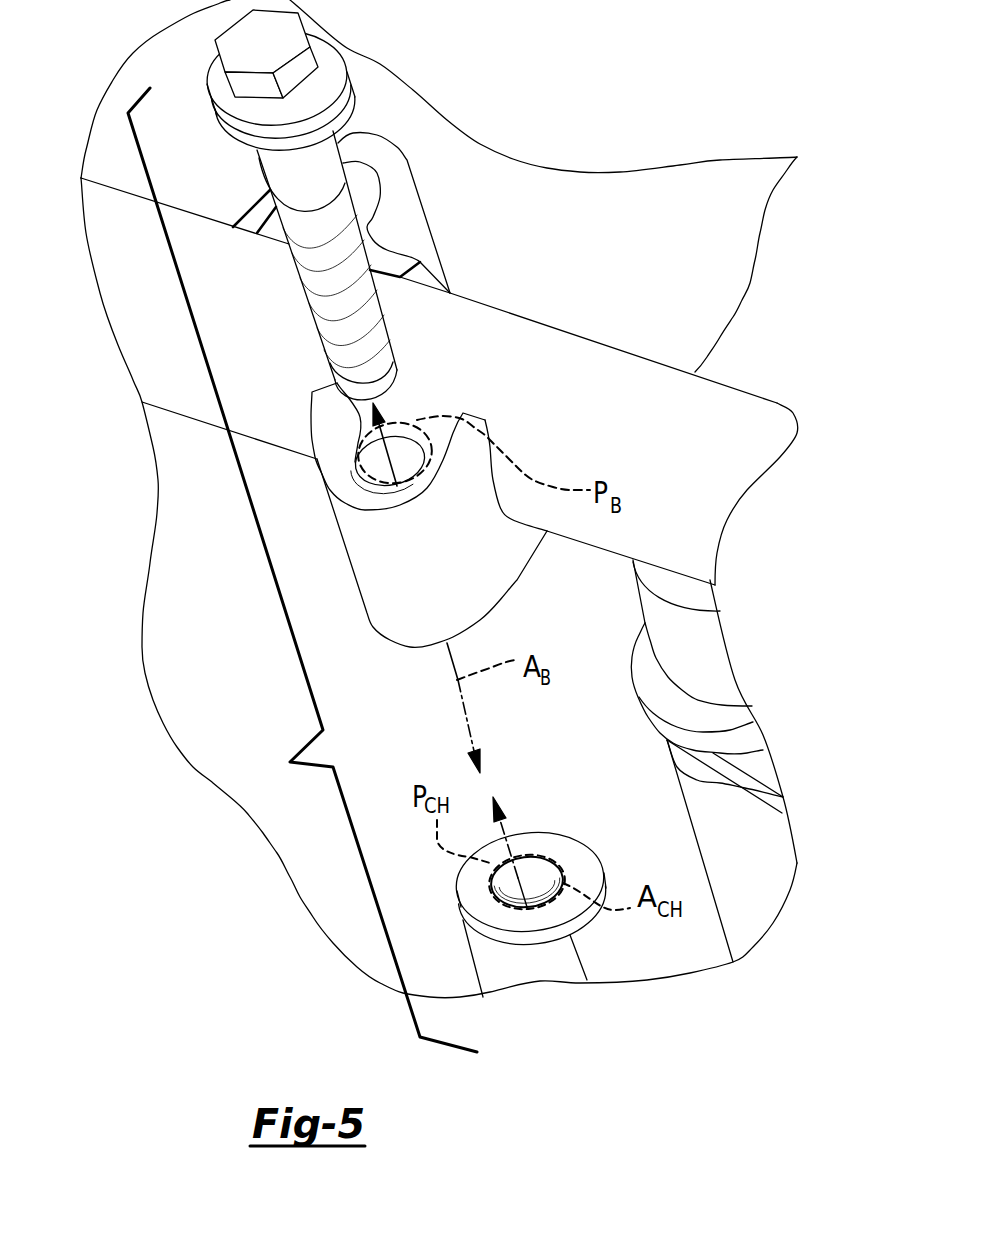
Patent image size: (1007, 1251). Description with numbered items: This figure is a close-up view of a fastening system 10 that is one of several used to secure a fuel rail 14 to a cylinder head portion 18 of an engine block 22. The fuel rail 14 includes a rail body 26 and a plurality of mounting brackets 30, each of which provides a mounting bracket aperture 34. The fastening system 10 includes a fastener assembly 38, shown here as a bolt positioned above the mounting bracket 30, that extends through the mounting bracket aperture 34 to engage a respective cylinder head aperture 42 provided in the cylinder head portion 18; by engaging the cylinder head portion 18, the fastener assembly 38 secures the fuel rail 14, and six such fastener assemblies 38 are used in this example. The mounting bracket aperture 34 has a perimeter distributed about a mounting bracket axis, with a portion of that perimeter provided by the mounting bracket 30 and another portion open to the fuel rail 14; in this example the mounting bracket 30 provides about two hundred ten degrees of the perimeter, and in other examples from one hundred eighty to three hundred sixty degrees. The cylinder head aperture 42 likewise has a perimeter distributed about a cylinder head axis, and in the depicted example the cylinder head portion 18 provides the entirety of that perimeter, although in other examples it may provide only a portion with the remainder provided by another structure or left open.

The fastening system 10 is at (439, 526).
The fuel rail 14 is at (737, 207).
The cylinder head portion 18 is at (523, 973).
The engine block 22 is at (350, 892).
The rail body 26 is at (615, 200).
The mounting bracket 30 is at (373, 573).
The mounting bracket aperture 34 is at (403, 447).
The fastener assembly 38 is at (338, 233).
The cylinder head aperture 42 is at (540, 870).